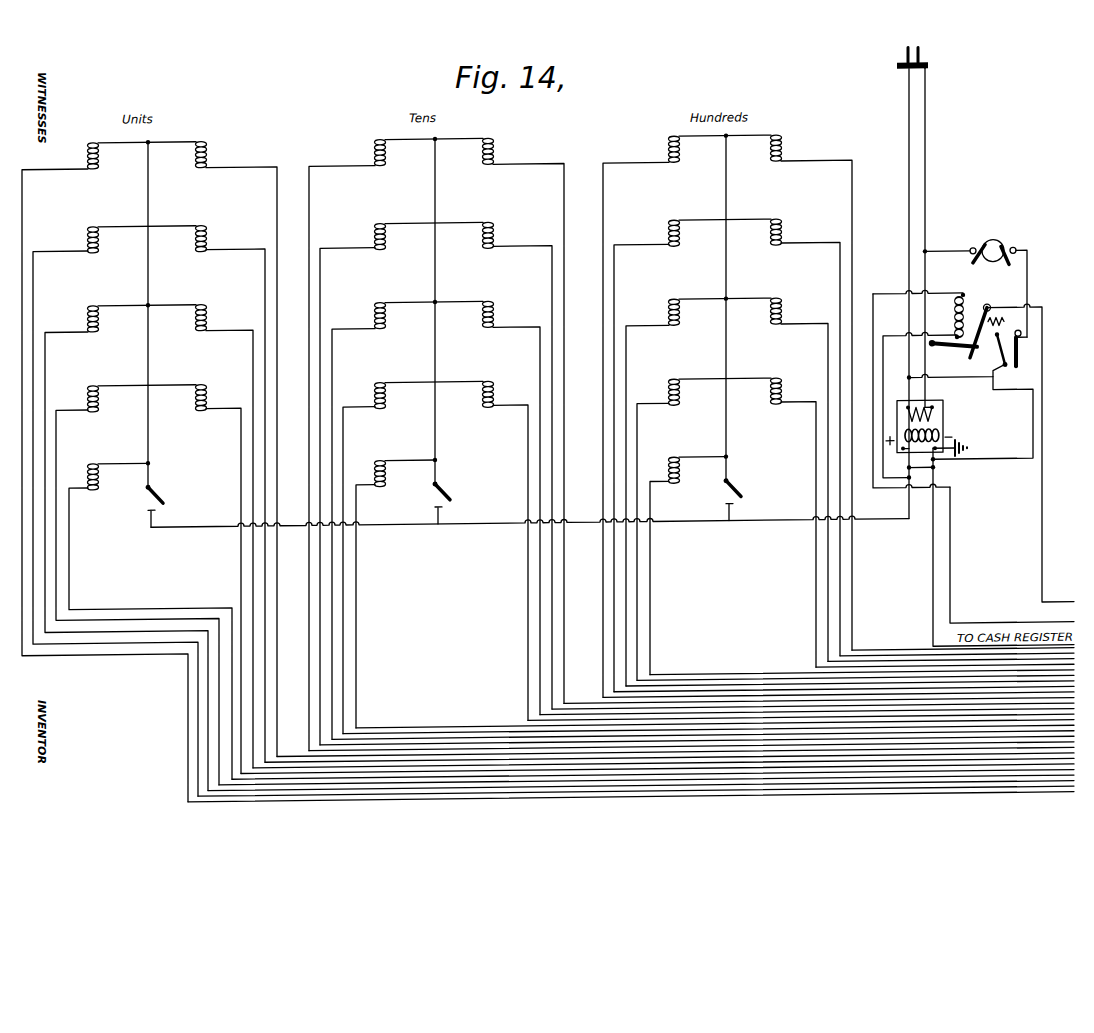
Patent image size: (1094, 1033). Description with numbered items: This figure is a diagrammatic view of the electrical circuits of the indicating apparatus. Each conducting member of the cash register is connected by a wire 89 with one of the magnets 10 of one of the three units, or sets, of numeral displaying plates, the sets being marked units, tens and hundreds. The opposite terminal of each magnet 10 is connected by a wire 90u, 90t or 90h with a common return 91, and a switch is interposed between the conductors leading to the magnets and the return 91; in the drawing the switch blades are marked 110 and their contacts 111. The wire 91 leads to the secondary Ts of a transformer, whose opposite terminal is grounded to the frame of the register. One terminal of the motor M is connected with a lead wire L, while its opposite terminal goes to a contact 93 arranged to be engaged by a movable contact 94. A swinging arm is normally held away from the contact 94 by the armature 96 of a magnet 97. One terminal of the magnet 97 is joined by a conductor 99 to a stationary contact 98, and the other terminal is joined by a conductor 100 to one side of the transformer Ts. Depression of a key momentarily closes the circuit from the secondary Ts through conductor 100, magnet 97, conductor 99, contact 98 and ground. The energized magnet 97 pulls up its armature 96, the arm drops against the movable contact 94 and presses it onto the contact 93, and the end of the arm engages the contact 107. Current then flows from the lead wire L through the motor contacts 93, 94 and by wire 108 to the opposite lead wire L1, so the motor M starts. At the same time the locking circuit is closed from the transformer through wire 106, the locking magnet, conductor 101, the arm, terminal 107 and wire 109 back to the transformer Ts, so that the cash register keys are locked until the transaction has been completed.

The magnet 10 is at (208, 328).
The wire 89 is at (1044, 717).
The wire 90u is at (156, 370).
The wire 90t is at (444, 370).
The wire 90h is at (735, 376).
The common return 91 is at (530, 532).
The contact 93 is at (1021, 348).
The movable contact 94 is at (1019, 362).
The armature 96 is at (953, 353).
The magnet 97 is at (953, 326).
The stationary contact 98 is at (987, 323).
The conductor 99 is at (952, 506).
The conductor 100 is at (893, 490).
The conductor 101 is at (1043, 419).
The conductor 106 is at (970, 482).
The contact 107 is at (996, 372).
The wire 108 is at (921, 390).
The wire 109 is at (1000, 403).
The switch blade 110 is at (166, 498).
The switch contact 111 is at (156, 513).
The lead wire L1 is at (908, 216).
The lead wire L is at (925, 239).
The motor M is at (995, 256).
The transformer secondary Ts is at (932, 445).